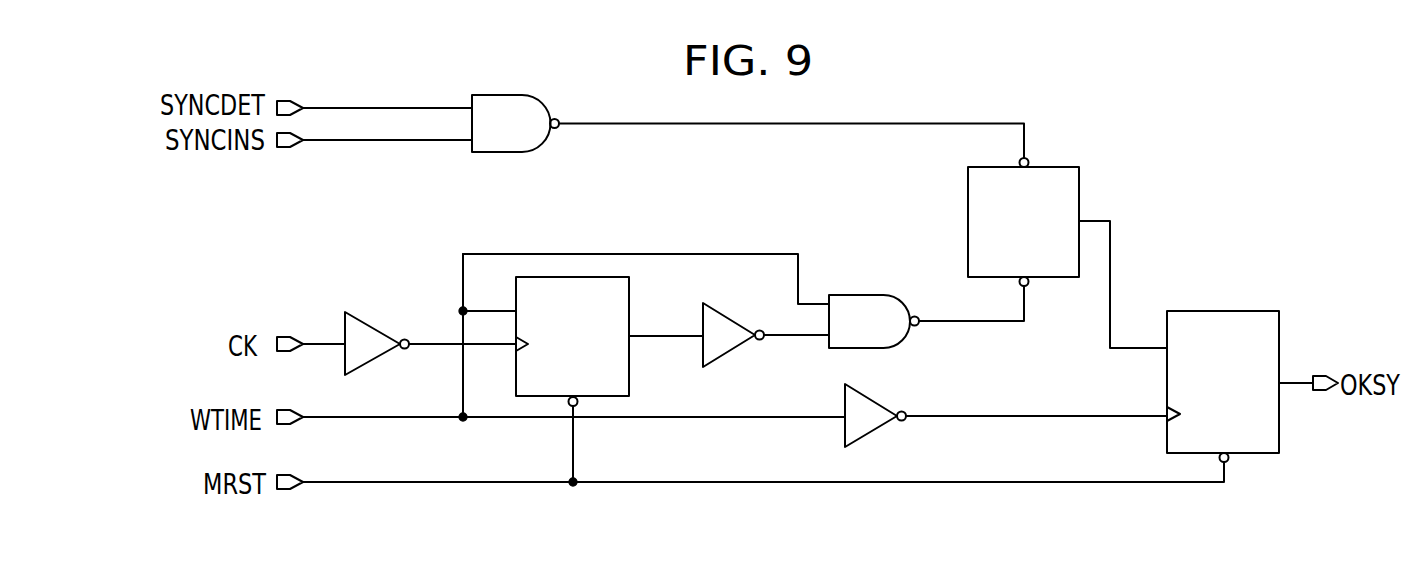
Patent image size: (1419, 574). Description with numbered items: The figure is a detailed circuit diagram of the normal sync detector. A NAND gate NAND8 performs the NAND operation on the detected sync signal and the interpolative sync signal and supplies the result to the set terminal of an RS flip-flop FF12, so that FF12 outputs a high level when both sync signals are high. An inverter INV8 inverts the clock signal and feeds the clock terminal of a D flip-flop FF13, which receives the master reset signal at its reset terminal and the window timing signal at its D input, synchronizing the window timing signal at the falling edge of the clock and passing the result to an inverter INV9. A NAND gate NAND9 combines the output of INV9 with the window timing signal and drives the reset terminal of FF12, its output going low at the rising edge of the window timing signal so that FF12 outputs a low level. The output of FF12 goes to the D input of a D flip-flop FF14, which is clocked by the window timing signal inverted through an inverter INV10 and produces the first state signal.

The NAND gate NAND8 is at (549, 151).
The NAND gate NAND9 is at (880, 294).
The inverter INV8 is at (380, 314).
The inverter INV9 is at (742, 345).
The inverter INV10 is at (887, 425).
The RS flip-flop FF12 is at (1070, 166).
The D flip-flop FF13 is at (629, 302).
The D flip-flop FF14 is at (1237, 310).